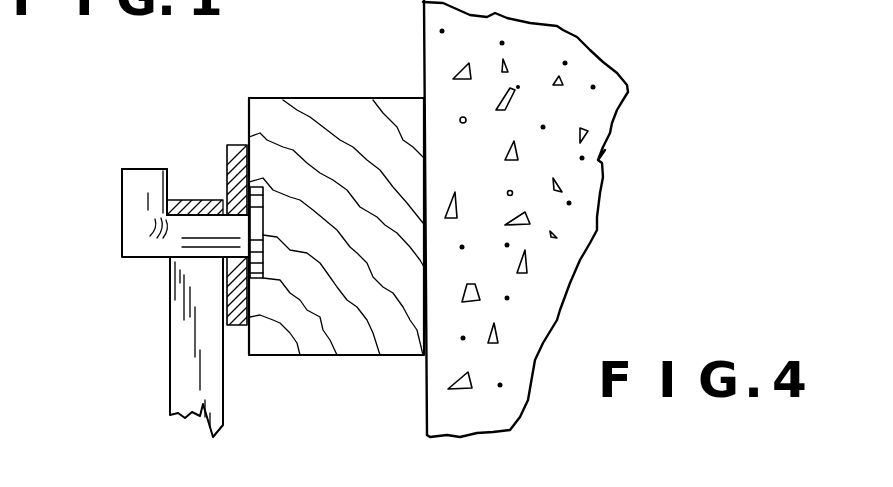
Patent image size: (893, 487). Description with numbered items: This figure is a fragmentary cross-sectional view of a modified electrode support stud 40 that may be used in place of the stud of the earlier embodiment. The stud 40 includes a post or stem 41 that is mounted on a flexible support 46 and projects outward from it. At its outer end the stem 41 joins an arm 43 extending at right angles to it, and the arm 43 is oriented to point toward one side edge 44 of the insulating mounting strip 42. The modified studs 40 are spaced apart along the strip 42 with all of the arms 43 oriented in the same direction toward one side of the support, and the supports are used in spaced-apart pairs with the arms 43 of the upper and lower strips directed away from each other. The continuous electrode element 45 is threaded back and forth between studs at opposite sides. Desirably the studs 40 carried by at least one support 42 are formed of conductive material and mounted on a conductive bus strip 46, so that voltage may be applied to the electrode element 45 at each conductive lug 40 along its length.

The stud 40 is at (138, 215).
The post or stem 41 is at (200, 237).
The mounting strip 42 is at (348, 118).
The arm 43 is at (135, 192).
The side edge 44 is at (292, 100).
The continuous electrode element 45 is at (187, 368).
The flexible support 46 is at (236, 147).